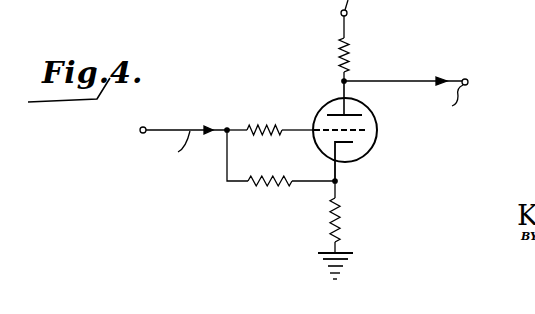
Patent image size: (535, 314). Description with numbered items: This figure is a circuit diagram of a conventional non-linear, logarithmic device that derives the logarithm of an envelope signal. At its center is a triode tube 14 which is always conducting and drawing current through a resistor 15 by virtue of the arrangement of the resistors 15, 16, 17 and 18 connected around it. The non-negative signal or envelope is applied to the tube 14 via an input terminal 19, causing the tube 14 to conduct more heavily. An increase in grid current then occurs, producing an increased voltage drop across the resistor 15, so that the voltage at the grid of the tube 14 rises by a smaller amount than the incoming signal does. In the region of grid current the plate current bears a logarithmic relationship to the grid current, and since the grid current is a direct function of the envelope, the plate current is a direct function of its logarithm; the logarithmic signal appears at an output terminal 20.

The triode tube 14 is at (377, 142).
The resistor 15 is at (255, 123).
The resistor 16 is at (350, 55).
The resistor 17 is at (268, 190).
The resistor 18 is at (342, 223).
The input terminal 19 is at (146, 126).
The output terminal 20 is at (465, 79).